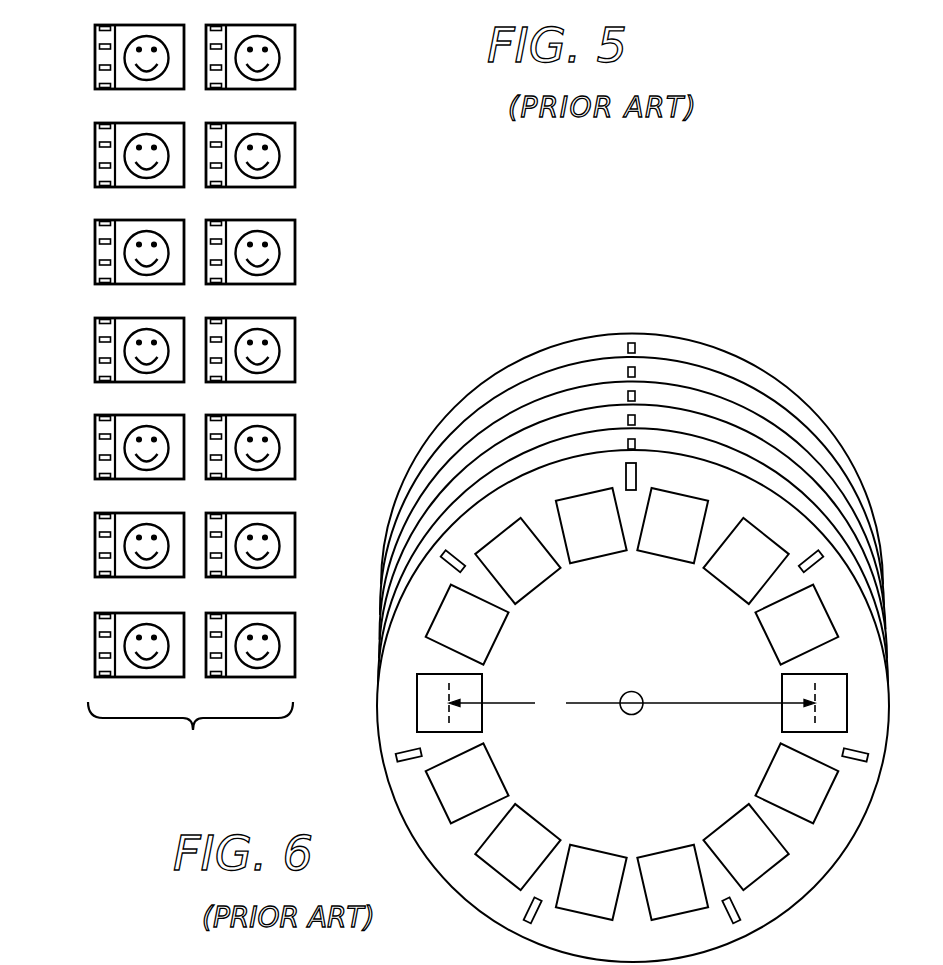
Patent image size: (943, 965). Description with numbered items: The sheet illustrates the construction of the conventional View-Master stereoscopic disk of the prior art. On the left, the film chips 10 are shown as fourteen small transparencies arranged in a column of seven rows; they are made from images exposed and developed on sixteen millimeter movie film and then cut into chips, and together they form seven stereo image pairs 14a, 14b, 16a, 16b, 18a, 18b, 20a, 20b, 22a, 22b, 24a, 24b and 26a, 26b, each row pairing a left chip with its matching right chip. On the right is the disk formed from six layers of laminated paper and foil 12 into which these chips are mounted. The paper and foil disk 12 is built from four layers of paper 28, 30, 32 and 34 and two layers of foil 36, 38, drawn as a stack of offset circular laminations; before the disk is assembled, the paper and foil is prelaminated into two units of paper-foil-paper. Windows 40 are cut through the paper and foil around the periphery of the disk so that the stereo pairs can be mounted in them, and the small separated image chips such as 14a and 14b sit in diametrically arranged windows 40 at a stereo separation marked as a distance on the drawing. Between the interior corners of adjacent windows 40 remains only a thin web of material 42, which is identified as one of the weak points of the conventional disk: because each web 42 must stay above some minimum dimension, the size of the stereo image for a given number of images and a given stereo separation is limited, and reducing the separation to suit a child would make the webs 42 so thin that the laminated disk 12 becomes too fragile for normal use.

In FIG. 5, the film chips 10 is at (392, 117).
In FIG. 6, the laminated paper and foil disk 12 is at (720, 258).
In FIG. 5, the stereo image pair (left chip) 14a is at (96, 72).
In FIG. 5, the stereo image pair (right chip) 14b is at (296, 52).
In FIG. 5, the stereo image pair (left chip) 16a is at (96, 168).
In FIG. 5, the stereo image pair (right chip) 16b is at (296, 158).
In FIG. 5, the stereo image pair (left chip) 18a is at (96, 262).
In FIG. 5, the stereo image pair (right chip) 18b is at (296, 256).
In FIG. 5, the stereo image pair (left chip) 20a is at (96, 352).
In FIG. 5, the stereo image pair (right chip) 20b is at (296, 354).
In FIG. 5, the stereo image pair (left chip) 22a is at (96, 462).
In FIG. 5, the stereo image pair (right chip) 22b is at (296, 448).
In FIG. 5, the stereo image pair (left chip) 24a is at (96, 558).
In FIG. 5, the stereo image pair (right chip) 24b is at (296, 544).
In FIG. 5, the stereo image pair (left chip) 26a is at (96, 645).
In FIG. 5, the stereo image pair (right chip) 26b is at (296, 640).
In FIG. 6, the layer of paper 28 is at (652, 332).
In FIG. 6, the layer of paper 30 is at (687, 383).
In FIG. 6, the layer of paper 32 is at (715, 437).
In FIG. 6, the layer of paper 34 is at (742, 475).
In FIG. 6, the layer of foil 36 is at (800, 468).
In FIG. 6, the layer of foil 38 is at (798, 443).
In FIG. 6, the windows 40 is at (588, 558).
In FIG. 6, the web of material 42 is at (746, 615).